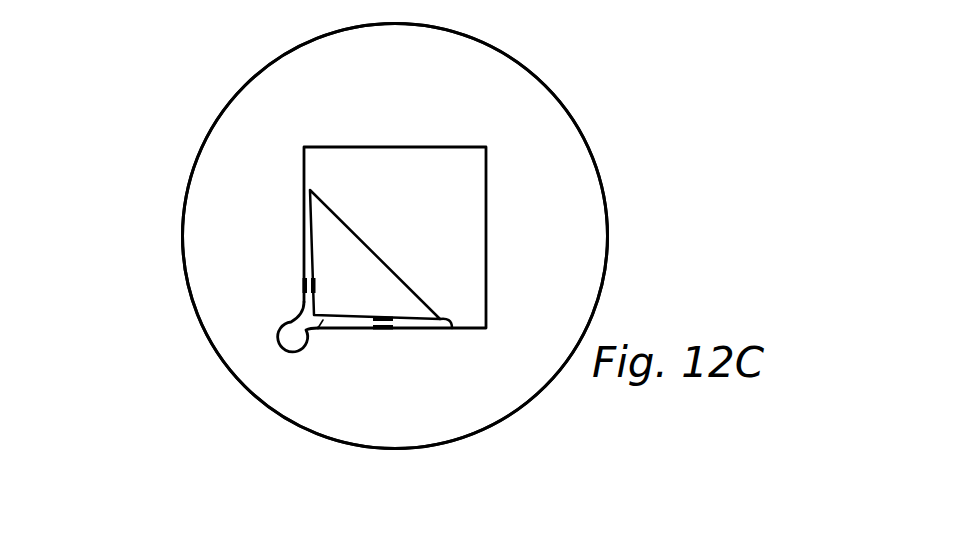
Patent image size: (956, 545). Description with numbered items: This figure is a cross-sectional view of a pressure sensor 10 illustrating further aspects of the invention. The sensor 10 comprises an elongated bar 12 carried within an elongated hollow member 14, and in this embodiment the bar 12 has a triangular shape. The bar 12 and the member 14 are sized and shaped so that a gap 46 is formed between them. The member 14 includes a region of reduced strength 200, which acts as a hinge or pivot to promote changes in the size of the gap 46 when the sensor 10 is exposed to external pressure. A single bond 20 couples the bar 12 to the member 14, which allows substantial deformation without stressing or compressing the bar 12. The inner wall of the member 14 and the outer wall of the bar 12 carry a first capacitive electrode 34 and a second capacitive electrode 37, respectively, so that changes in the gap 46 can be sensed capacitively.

The pressure sensor 10 is at (588, 106).
The elongated hollow member 14 is at (568, 169).
The elongated bar 12 is at (328, 213).
The bond 20 is at (450, 324).
The first capacitive electrode 34 is at (302, 284).
The second capacitive electrode 37 is at (382, 316).
The gap 46 is at (323, 320).
The region of reduced strength 200 is at (278, 333).